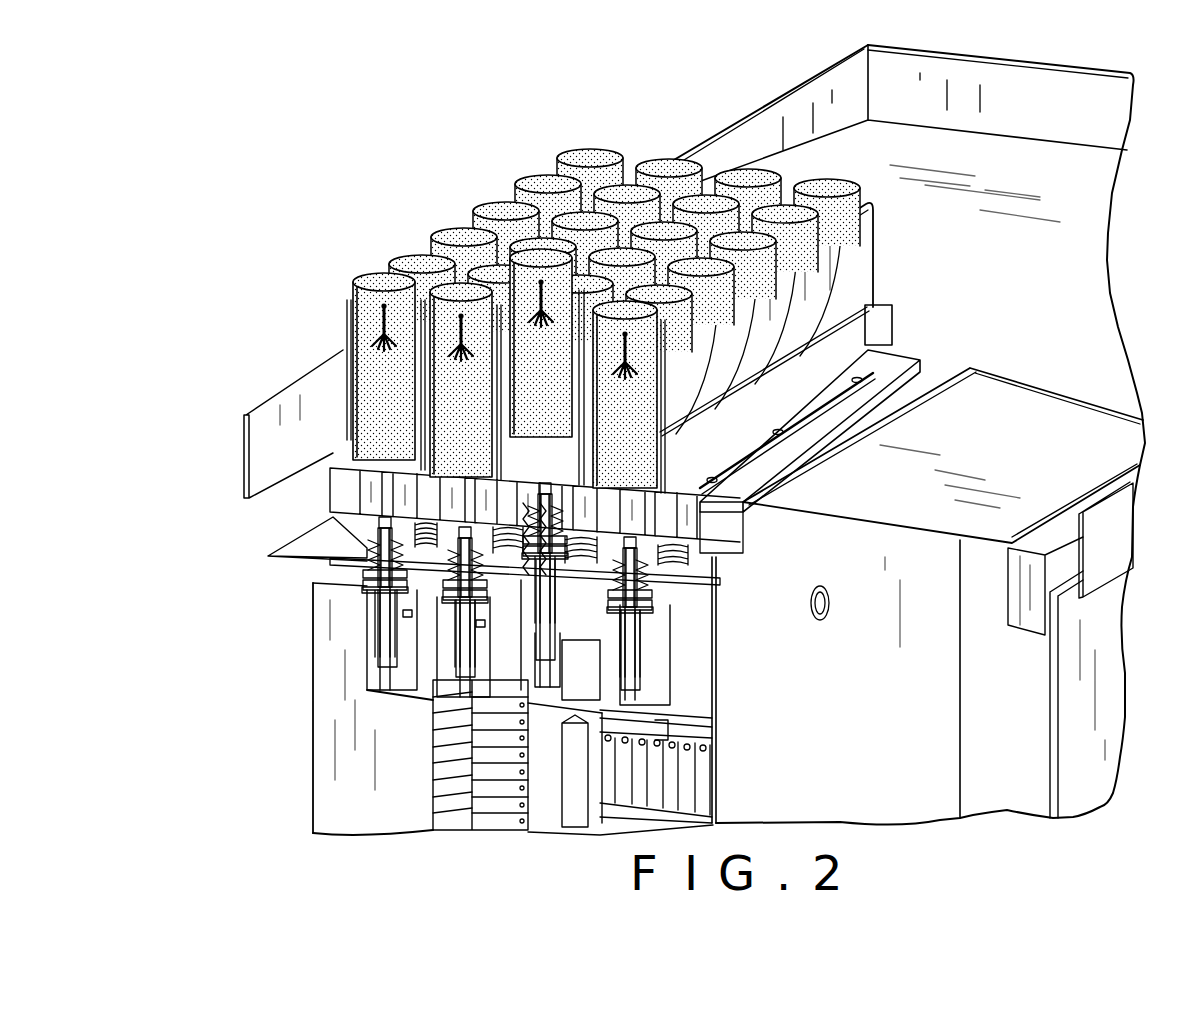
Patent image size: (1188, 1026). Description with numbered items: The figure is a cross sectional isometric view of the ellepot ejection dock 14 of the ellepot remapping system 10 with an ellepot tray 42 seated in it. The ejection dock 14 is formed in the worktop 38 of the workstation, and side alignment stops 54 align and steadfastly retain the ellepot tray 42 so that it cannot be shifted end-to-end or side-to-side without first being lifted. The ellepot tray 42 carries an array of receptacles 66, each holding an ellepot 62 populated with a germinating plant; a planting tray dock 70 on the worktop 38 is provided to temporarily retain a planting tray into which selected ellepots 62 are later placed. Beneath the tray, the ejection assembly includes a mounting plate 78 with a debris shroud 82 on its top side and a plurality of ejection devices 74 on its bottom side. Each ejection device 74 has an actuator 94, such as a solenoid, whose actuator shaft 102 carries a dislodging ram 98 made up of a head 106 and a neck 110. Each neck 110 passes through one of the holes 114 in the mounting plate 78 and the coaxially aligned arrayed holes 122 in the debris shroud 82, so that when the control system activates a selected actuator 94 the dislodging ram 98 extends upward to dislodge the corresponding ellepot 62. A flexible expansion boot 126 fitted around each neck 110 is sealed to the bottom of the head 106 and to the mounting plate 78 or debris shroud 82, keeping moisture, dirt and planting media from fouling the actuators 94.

The ellepot remapping system 10 is at (317, 235).
The ellepot ejection dock 14 is at (907, 290).
The worktop 38 is at (863, 153).
The ellepot tray 42 is at (873, 242).
The side alignment stops 54 is at (860, 335).
The ellepot 62 is at (603, 288).
The receptacle 66 is at (828, 400).
The planting tray dock 70 is at (1053, 443).
The ejection device 74 is at (357, 671).
The mounting plate 78 is at (381, 621).
The debris shroud 82 is at (312, 542).
The actuator 94 is at (400, 685).
The dislodging ram 98 is at (340, 518).
The actuator shaft 102 is at (381, 642).
The head 106 is at (374, 487).
The neck 110 is at (374, 537).
The holes 114 is at (376, 587).
The arrayed holes 122 is at (367, 566).
The flexible expansion boot 126 is at (374, 551).